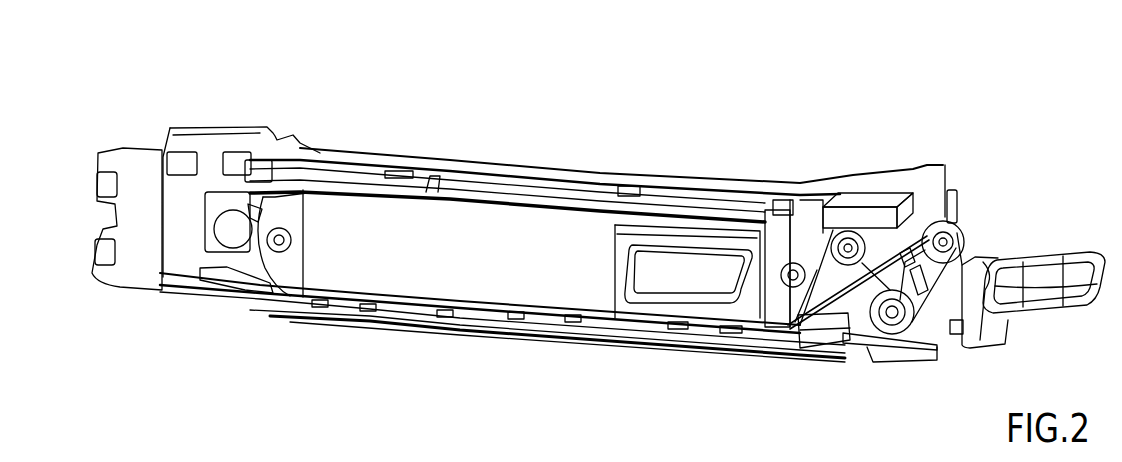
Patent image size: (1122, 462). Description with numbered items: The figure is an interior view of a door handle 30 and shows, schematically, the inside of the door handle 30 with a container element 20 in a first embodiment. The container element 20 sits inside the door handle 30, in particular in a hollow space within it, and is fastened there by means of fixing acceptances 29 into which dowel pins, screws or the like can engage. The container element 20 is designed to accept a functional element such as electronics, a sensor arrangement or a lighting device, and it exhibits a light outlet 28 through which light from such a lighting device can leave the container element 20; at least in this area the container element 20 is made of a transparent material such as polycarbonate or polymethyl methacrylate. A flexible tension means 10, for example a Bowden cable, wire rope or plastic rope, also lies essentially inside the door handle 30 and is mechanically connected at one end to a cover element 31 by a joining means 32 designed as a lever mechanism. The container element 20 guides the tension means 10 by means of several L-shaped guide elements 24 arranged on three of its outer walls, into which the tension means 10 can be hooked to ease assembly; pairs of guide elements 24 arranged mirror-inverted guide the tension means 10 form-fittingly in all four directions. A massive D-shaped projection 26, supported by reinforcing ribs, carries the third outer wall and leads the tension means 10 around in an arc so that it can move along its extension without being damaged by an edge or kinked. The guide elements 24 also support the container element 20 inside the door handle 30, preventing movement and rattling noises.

The tension means 10 is at (442, 197).
The container element 20 is at (487, 272).
The guide elements 24 is at (735, 405).
The D-shaped projection 26 is at (282, 210).
The light outlet 28 is at (684, 266).
The fixing acceptances 29 is at (262, 313).
The door handle 30 is at (748, 97).
The cover element 31 is at (1050, 273).
The joining means 32 is at (937, 320).